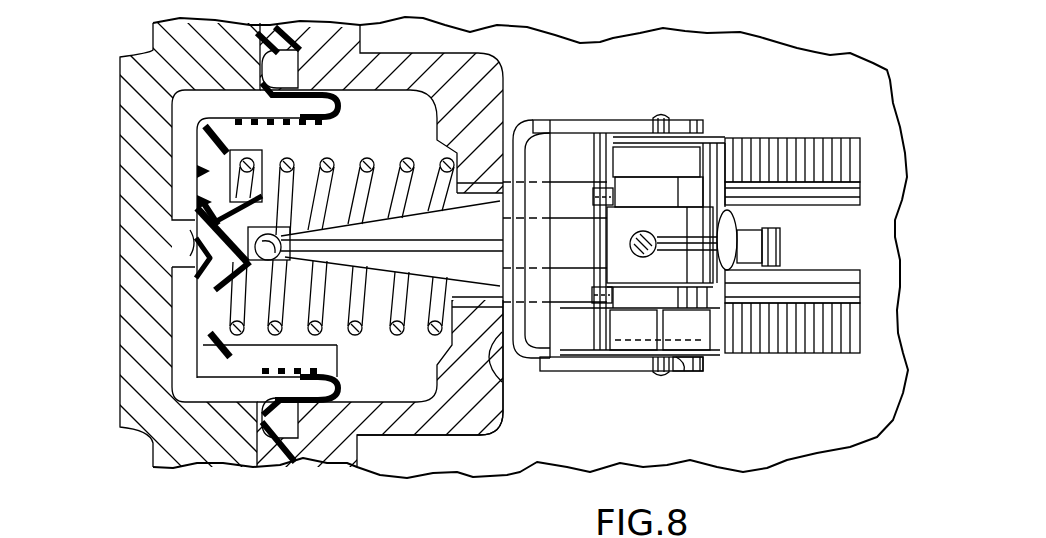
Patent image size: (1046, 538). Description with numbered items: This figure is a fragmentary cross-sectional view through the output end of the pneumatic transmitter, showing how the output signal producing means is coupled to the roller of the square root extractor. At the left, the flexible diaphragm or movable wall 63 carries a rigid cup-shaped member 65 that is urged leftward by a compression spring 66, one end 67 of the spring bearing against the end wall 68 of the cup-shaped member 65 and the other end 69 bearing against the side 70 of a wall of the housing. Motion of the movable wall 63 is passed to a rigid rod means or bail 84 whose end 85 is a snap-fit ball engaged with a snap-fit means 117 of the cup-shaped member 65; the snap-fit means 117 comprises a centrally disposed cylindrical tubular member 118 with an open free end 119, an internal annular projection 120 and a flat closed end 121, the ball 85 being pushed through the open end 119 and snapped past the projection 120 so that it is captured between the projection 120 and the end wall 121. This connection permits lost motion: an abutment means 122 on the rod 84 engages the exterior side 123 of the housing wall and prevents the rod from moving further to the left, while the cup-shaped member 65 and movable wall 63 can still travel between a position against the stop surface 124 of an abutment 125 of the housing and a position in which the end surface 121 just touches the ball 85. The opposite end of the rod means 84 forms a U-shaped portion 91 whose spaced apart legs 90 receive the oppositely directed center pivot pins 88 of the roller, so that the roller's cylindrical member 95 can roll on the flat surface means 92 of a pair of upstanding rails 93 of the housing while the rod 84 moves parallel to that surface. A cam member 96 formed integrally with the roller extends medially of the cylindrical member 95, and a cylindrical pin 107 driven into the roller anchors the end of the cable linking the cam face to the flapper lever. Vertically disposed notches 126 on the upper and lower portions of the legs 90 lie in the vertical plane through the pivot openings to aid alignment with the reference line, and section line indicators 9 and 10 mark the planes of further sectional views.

The flexible diaphragm means or movable wall 63 is at (350, 87).
The rigid cup-shaped member 65 is at (207, 153).
The compression spring 66 is at (407, 153).
The one end of compression spring 67 is at (205, 337).
The end wall of cup-shaped member 68 is at (205, 170).
The another end of compression spring 69 is at (506, 95).
The side of wall 70 is at (450, 337).
The movable rigid rod means or bail 84 is at (460, 223).
The snap-fit ball end of rod means 85 is at (205, 303).
The center pivot pins 88 is at (661, 117).
The spaced apart legs 90 is at (613, 123).
The U-shaped portion 91 is at (570, 120).
The flat surface means 92 is at (850, 207).
The upstanding rails 93 is at (845, 138).
The substantially cylindrical member 95 is at (667, 212).
The cam member 96 is at (778, 250).
The cylindrical pin 107 is at (632, 231).
The snap-fit means 117 is at (333, 146).
The substantially cylindrical tubular member 118 is at (257, 178).
The open free end 119 is at (300, 262).
The internal annular projection 120 is at (263, 262).
The flat closed end 121 is at (195, 210).
The abutment means 122 is at (502, 382).
The exterior side of wall 123 is at (500, 403).
The stop surface 124 is at (195, 273).
The abutment 125 is at (182, 243).
The vertically disposed notches 126 is at (680, 375).
The section line 9- 9 is at (823, 85).
The section line 10- 10 is at (630, 245).